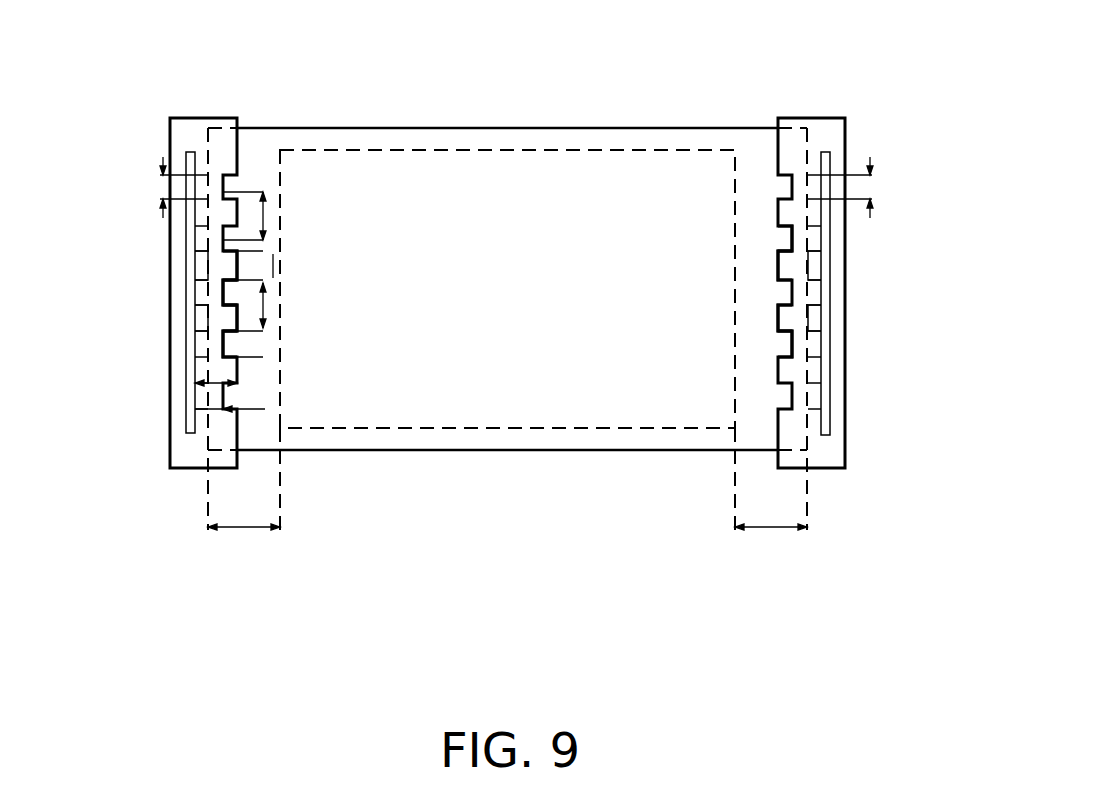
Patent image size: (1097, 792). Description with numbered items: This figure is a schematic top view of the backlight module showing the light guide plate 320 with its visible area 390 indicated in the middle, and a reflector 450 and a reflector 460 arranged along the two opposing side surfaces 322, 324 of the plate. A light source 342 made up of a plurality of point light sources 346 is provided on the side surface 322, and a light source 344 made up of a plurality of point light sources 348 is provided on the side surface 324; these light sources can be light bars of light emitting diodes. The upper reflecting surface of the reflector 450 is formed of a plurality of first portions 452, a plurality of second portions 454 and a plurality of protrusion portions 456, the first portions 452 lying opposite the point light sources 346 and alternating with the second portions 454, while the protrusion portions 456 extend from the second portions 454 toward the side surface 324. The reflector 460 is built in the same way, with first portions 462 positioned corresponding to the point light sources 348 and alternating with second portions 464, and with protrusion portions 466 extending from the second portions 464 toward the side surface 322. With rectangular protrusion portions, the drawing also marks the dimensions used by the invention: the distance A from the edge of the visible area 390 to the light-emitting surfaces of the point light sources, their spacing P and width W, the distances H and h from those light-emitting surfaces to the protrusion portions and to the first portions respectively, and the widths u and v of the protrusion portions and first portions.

The light guide plate 320 is at (547, 373).
The visible area 390 is at (605, 150).
The reflector 450 is at (210, 114).
The reflector 460 is at (797, 114).
The light source 342 is at (190, 148).
The light source 344 is at (825, 148).
The point light sources 346 is at (207, 183).
The point light sources 348 is at (813, 193).
The side surface 322 is at (208, 208).
The side surface 324 is at (810, 212).
The first portions 452 is at (208, 290).
The second portions 454 is at (208, 265).
The protrusion portions 456 is at (230, 267).
The first portions 462 is at (800, 240).
The second portions 464 is at (803, 273).
The protrusion portions 466 is at (783, 267).